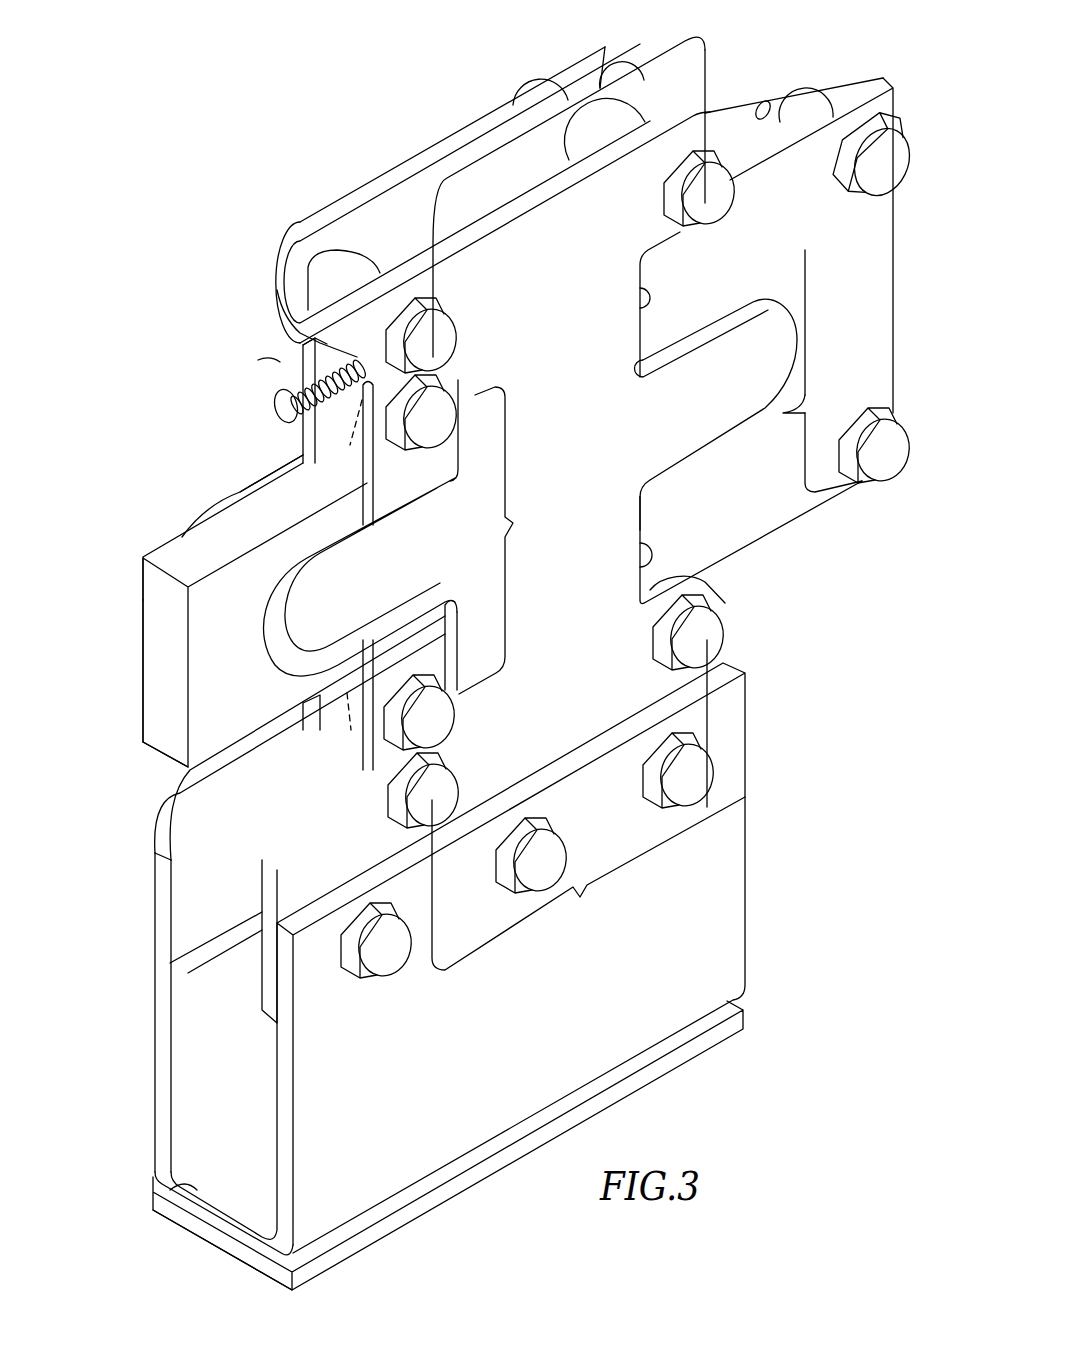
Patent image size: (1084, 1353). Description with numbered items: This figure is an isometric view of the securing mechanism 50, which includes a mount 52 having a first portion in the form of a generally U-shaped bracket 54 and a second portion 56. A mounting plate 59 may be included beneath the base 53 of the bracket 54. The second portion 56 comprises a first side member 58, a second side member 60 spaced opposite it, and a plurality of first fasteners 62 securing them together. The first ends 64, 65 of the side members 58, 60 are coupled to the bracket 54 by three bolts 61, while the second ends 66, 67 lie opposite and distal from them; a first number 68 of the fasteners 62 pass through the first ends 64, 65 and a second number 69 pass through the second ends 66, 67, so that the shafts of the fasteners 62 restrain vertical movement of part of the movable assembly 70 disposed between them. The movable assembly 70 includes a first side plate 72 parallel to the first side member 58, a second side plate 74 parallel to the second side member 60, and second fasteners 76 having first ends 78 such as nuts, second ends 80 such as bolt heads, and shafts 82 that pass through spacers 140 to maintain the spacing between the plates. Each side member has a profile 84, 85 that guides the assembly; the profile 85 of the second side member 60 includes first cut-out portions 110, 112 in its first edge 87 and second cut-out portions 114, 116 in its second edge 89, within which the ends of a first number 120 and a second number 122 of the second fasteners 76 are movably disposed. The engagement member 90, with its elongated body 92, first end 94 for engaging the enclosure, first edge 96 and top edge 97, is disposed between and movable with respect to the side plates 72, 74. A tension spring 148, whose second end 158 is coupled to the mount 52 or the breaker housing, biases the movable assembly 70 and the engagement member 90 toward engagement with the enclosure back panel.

The securing mechanism 50 is at (768, 1082).
The mount 52 is at (190, 1075).
The base 53 is at (162, 1195).
The generally U-shaped bracket 54 is at (186, 1013).
The second portion 56 is at (398, 204).
The first side member 58 is at (500, 197).
The mounting plate 59 is at (202, 1235).
The second side member 60 is at (598, 462).
The bolts 61 is at (652, 790).
The first fasteners 62 is at (530, 80).
The first end of first side member 64 is at (168, 928).
The first end of second side member 65 is at (258, 988).
The second end of first side member 66 is at (605, 52).
The second end of second side member 67 is at (709, 100).
The first number of first fasteners 68 is at (588, 805).
The second number of first fasteners 69 is at (608, 62).
The movable assembly 70 is at (212, 393).
The first side plate 72 is at (320, 433).
The second side plate 74 is at (868, 307).
The second fasteners 76 is at (893, 133).
The first ends 78 is at (773, 52).
The second ends 80 is at (832, 170).
The shafts 82 is at (828, 92).
The profile 84 is at (308, 343).
The profile 85 is at (640, 513).
The first edge 87 is at (262, 645).
The second edge 89 is at (800, 330).
The engagement member 90 is at (210, 588).
The elongated body 92 is at (251, 602).
The first end 94 is at (144, 560).
The first edge 96 is at (167, 760).
The second edge 97 is at (173, 552).
The first cut-out portion 110 is at (443, 610).
The first cut-out portion 112 is at (453, 457).
The second cut-out portion 114 is at (642, 556).
The second cut-out portion 116 is at (641, 298).
The first number of second fasteners 120 is at (513, 523).
The second number of second fasteners 122 is at (787, 420).
The spacers 140 is at (788, 118).
The tension spring 148 is at (330, 430).
The second end 158 is at (275, 405).